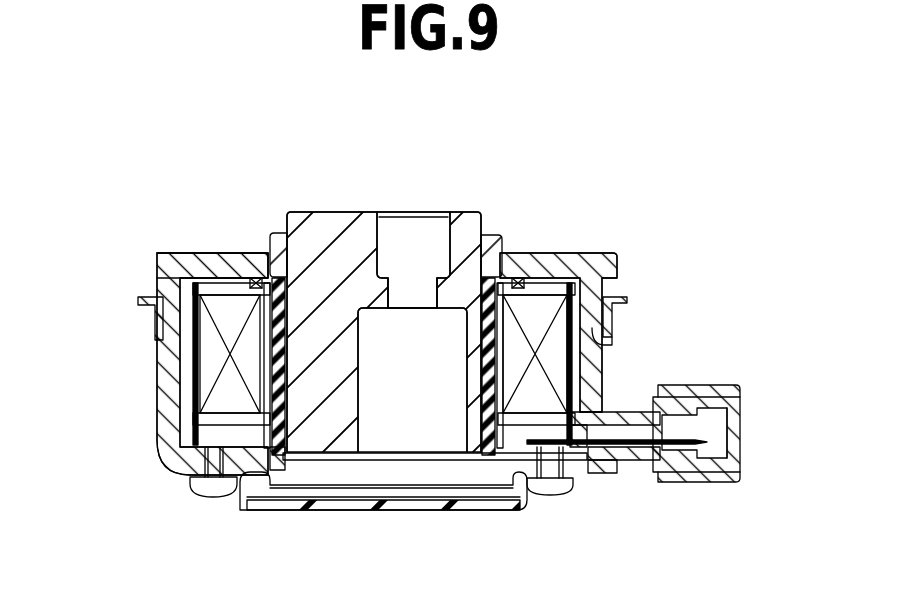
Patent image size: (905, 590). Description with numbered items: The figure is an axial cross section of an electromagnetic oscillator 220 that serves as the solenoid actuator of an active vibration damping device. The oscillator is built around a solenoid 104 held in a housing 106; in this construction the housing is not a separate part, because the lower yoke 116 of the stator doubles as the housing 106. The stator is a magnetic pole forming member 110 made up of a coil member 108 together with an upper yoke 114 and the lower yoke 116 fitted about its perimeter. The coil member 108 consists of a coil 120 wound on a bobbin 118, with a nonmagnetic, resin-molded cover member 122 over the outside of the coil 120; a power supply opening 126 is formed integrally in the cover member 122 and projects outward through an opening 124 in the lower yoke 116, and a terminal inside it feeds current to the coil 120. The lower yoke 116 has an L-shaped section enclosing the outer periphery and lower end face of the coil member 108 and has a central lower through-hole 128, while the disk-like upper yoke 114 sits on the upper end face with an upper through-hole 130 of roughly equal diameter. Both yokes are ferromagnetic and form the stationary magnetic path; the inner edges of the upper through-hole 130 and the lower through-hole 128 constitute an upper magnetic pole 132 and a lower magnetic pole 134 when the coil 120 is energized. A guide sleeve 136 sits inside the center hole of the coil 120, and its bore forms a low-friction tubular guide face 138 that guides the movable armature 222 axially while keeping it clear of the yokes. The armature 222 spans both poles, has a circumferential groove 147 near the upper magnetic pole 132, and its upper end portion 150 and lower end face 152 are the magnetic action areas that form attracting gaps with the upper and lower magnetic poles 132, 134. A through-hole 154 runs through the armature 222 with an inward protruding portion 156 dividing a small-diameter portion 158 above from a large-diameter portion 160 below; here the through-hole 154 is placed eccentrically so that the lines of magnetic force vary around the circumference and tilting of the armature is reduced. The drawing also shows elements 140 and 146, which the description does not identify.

The solenoid 104 is at (583, 197).
The housing 106 is at (212, 364).
The coil member 108 is at (589, 373).
The magnetic pole forming member 110 is at (632, 256).
The upper yoke 114 is at (203, 262).
The lower yoke 116 is at (173, 360).
The bobbin 118 is at (566, 303).
The coil 120 is at (547, 352).
The cover member 122 is at (563, 278).
The opening 124 is at (607, 345).
The power supply opening 126 is at (683, 402).
The lower through-hole 128 is at (300, 483).
The upper through-hole 130 is at (273, 233).
The upper magnetic pole 132 is at (488, 236).
The lower magnetic pole 134 is at (494, 462).
The guide sleeve 136 is at (232, 372).
The tubular guide face 138 is at (480, 468).
The left hook bracket 140 is at (146, 296).
The bottom gasket 146 is at (370, 504).
The circumferential groove 147 is at (270, 240).
The upper end portion 150 is at (308, 225).
The lower end face 152 is at (312, 458).
The through-hole 154 is at (372, 90).
The inward protruding portion 156 is at (383, 292).
The small-diameter portion 158 is at (463, 342).
The large-diameter portion 160 is at (427, 310).
The electromagnetic oscillator 220 is at (577, 142).
The armature 222 is at (332, 228).